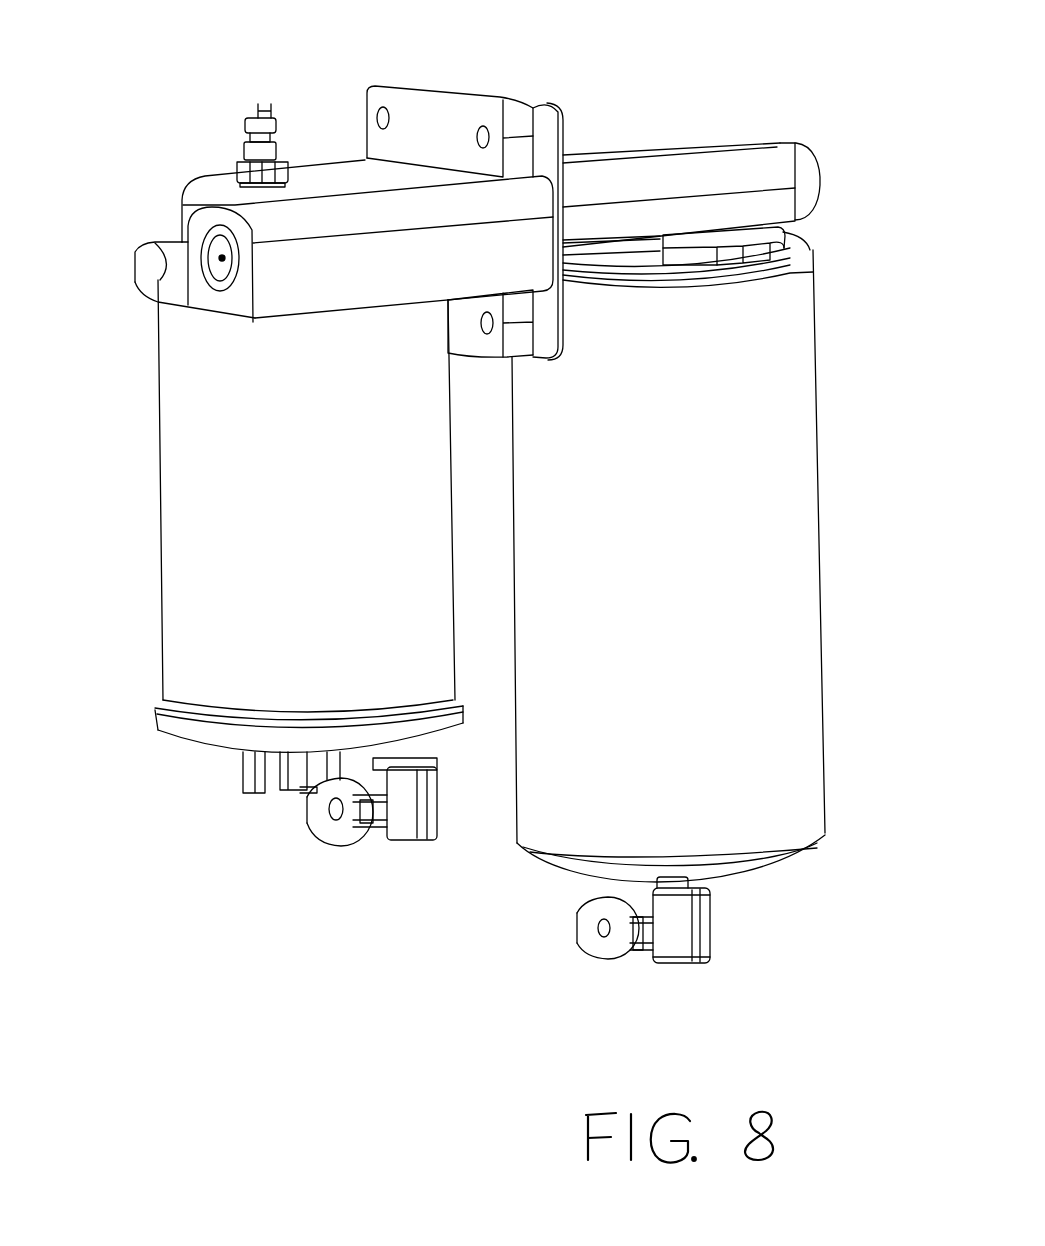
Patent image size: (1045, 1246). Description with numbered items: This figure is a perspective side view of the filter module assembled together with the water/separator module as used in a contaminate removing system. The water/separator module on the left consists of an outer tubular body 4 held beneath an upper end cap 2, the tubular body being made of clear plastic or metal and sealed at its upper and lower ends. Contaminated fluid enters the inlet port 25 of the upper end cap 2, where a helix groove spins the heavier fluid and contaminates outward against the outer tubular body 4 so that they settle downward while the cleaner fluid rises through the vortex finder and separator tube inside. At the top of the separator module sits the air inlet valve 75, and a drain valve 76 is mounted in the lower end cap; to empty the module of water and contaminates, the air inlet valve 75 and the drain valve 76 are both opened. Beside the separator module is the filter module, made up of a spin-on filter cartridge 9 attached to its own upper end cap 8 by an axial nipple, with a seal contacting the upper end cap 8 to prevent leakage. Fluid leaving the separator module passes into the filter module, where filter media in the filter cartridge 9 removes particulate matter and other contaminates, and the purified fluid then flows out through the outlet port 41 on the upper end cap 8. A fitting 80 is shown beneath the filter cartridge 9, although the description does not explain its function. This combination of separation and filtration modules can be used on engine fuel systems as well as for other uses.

The upper end cap 2 is at (124, 264).
The outer tubular body 4 is at (167, 522).
The upper end cap 8 is at (630, 150).
The filter cartridge 9 is at (832, 500).
The inlet port 25 is at (238, 258).
The outlet port 41 is at (824, 170).
The air inlet valve 75 is at (265, 110).
The drain valve 76 is at (402, 843).
The drain valve 80 is at (716, 935).